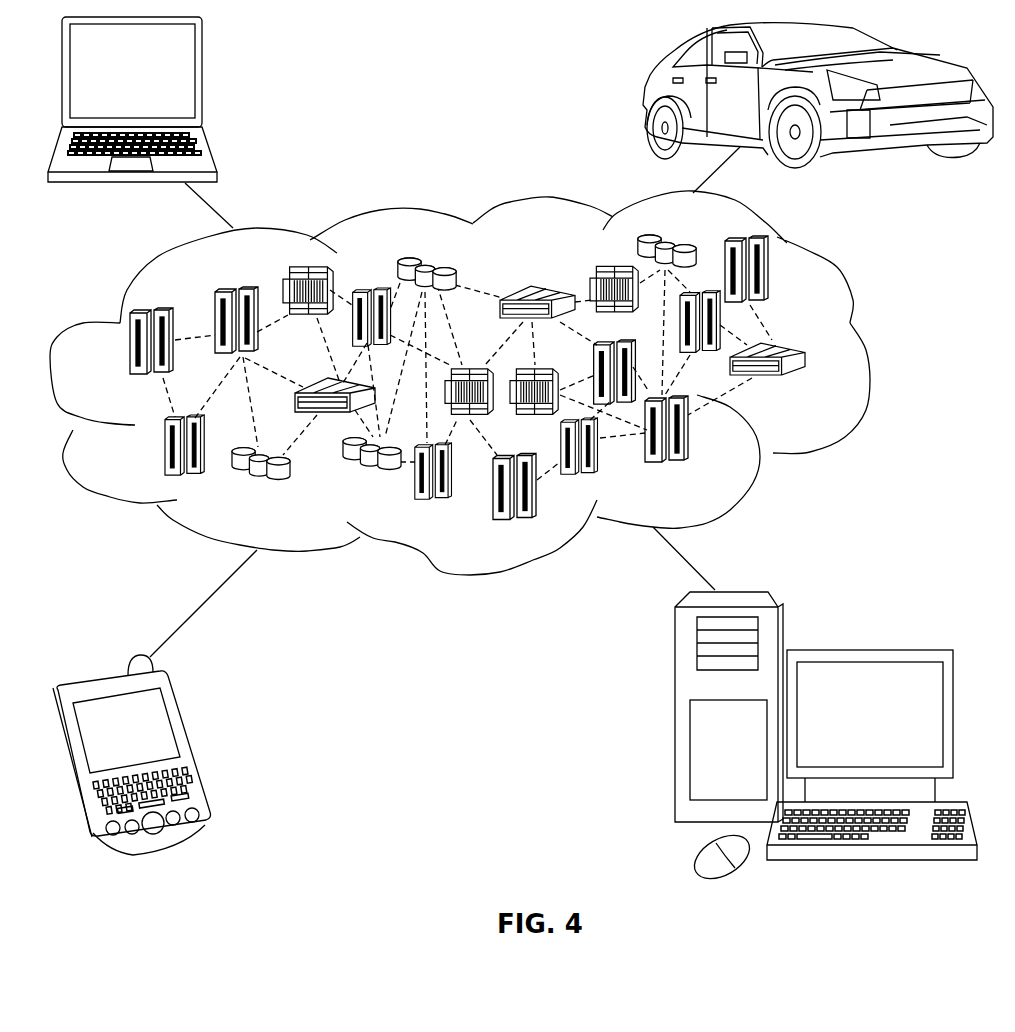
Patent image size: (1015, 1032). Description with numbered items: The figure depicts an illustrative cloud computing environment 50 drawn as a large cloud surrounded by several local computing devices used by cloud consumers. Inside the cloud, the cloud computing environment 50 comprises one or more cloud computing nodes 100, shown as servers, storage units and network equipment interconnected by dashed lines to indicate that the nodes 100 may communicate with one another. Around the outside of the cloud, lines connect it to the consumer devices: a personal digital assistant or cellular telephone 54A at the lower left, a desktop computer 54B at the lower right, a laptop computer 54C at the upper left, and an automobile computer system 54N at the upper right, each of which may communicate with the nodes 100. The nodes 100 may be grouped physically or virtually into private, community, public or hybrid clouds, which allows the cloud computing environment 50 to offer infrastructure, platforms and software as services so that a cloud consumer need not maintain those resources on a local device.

The cloud computing environment 50 is at (862, 353).
The cloud computing nodes 100 is at (810, 388).
The personal digital assistant or cellular telephone 54A is at (190, 745).
The desktop computer 54B is at (867, 650).
The laptop computer 54C is at (203, 81).
The automobile computer system 54N is at (818, 108).